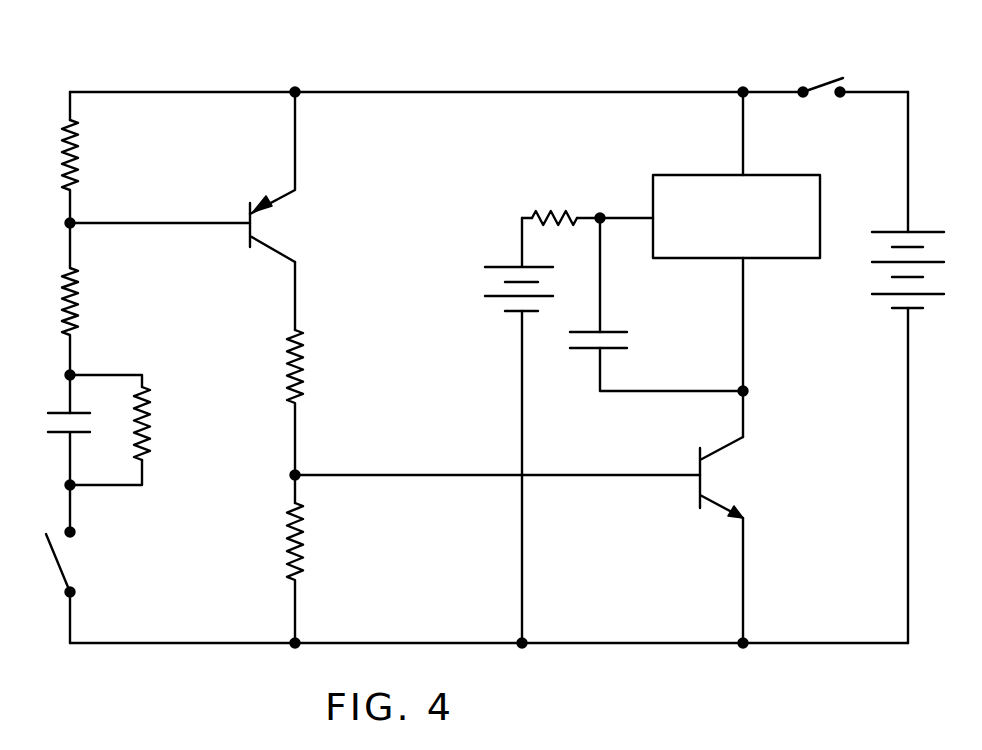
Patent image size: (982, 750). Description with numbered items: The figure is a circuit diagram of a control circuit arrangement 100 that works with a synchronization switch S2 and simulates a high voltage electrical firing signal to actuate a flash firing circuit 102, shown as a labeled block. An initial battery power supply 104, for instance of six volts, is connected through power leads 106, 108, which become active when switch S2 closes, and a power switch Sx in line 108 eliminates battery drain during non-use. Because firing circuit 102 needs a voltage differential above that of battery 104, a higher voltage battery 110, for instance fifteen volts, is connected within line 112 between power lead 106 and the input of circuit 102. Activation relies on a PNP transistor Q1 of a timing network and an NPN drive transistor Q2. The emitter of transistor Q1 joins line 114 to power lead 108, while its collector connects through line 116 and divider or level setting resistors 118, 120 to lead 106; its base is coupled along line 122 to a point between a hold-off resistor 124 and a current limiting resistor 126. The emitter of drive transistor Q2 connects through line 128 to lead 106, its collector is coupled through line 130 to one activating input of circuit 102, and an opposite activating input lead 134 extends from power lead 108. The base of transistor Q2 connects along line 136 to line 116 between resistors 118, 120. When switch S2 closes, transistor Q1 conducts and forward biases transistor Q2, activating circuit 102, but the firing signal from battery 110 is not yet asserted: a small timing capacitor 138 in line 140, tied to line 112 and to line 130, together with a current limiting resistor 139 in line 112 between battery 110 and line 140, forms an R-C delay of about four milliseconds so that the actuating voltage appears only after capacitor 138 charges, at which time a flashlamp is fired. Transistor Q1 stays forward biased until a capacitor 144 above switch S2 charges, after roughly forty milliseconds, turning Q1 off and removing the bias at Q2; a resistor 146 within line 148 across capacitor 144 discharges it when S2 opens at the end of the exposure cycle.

The control circuit arrangement 100 is at (896, 74).
The flash firing circuit 102 is at (798, 176).
The battery power supply 104 is at (920, 231).
The power lead 106 is at (590, 645).
The power lead 108 is at (519, 92).
The battery 110 is at (514, 266).
The line 112 is at (523, 404).
The line 114 is at (296, 127).
The line 116 is at (296, 309).
The level setting resistor 118 is at (288, 377).
The level setting resistor 120 is at (302, 536).
The line 122 is at (130, 223).
The hold-off resistor 124 is at (76, 137).
The current limiting resistor 126 is at (76, 302).
The line 128 is at (744, 565).
The line 130 is at (744, 352).
The line 134 is at (744, 127).
The line 136 is at (589, 475).
The timing capacitor 138 is at (628, 342).
The current limiting resistor 139 is at (568, 210).
The line 140 is at (598, 274).
The capacitor 144 is at (50, 420).
The resistor 146 is at (148, 428).
The line 148 is at (98, 375).
The PNP transistor Q1 is at (268, 218).
The NPN drive transistor Q2 is at (721, 477).
The synchronization switch S2 is at (71, 586).
The power switch Sx is at (812, 86).